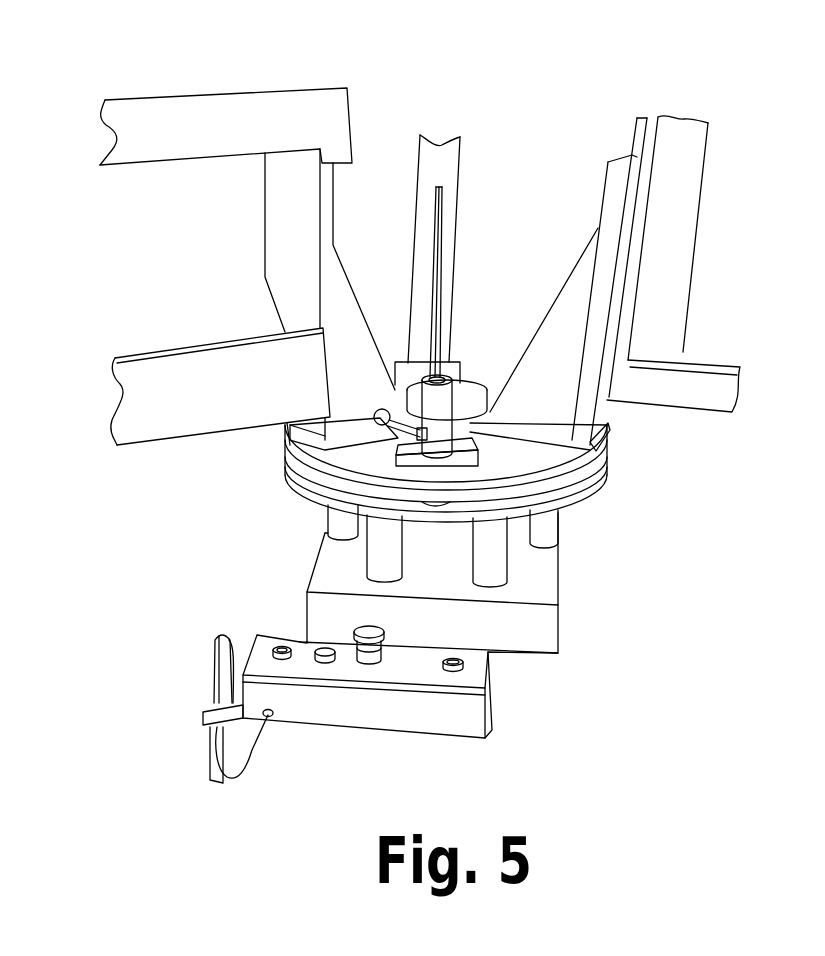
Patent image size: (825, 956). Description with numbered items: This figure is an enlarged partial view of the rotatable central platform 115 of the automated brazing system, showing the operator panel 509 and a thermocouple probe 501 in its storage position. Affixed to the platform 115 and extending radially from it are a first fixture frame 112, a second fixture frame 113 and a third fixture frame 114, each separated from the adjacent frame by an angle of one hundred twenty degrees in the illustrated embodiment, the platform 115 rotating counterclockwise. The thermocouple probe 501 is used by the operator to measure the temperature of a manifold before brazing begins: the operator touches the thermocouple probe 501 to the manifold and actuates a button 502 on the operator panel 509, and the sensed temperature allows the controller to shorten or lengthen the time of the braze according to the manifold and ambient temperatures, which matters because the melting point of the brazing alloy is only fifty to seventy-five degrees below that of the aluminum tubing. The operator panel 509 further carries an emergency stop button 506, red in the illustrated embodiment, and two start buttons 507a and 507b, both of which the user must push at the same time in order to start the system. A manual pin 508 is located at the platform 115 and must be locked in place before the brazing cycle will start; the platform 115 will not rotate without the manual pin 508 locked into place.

The first fixture frame 112 is at (187, 132).
The second fixture frame 113 is at (680, 140).
The third fixture frame 114 is at (438, 160).
The rotatable central platform 115 is at (521, 472).
The thermocouple probe 501 is at (216, 657).
The button 502 is at (325, 645).
The emergency stop button 506 is at (370, 663).
The first start button 507a is at (283, 660).
The second start button 507b is at (455, 670).
The manual pin 508 is at (440, 400).
The operator panel 509 is at (475, 670).